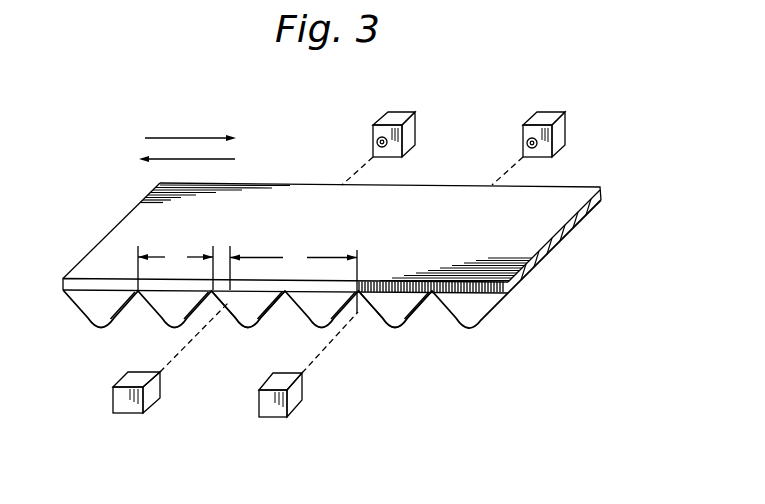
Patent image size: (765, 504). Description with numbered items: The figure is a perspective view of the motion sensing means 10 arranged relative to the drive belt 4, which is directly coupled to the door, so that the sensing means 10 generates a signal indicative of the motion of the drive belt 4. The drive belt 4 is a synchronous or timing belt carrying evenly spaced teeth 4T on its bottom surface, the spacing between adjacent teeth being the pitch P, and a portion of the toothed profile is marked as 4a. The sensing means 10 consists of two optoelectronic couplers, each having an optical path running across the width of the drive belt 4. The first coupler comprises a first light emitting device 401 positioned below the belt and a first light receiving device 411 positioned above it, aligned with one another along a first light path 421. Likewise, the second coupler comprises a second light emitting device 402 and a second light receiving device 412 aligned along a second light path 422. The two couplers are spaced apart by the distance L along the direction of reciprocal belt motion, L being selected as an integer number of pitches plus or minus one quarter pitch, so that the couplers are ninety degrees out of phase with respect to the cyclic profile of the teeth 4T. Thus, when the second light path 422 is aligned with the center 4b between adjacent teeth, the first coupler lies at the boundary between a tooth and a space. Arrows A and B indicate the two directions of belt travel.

The motion sensing means 10 is at (325, 254).
The drive belt 4 is at (297, 197).
The teeth 4T is at (79, 311).
The standard tooth portion 4a is at (252, 312).
The center between adjacent teeth 4b is at (362, 300).
The first light emitting device 401 is at (157, 395).
The second light emitting device 402 is at (301, 394).
The first light receiving device 411 is at (403, 128).
The second light receiving device 412 is at (553, 130).
The first light path 421 is at (190, 348).
The second light path 422 is at (345, 343).